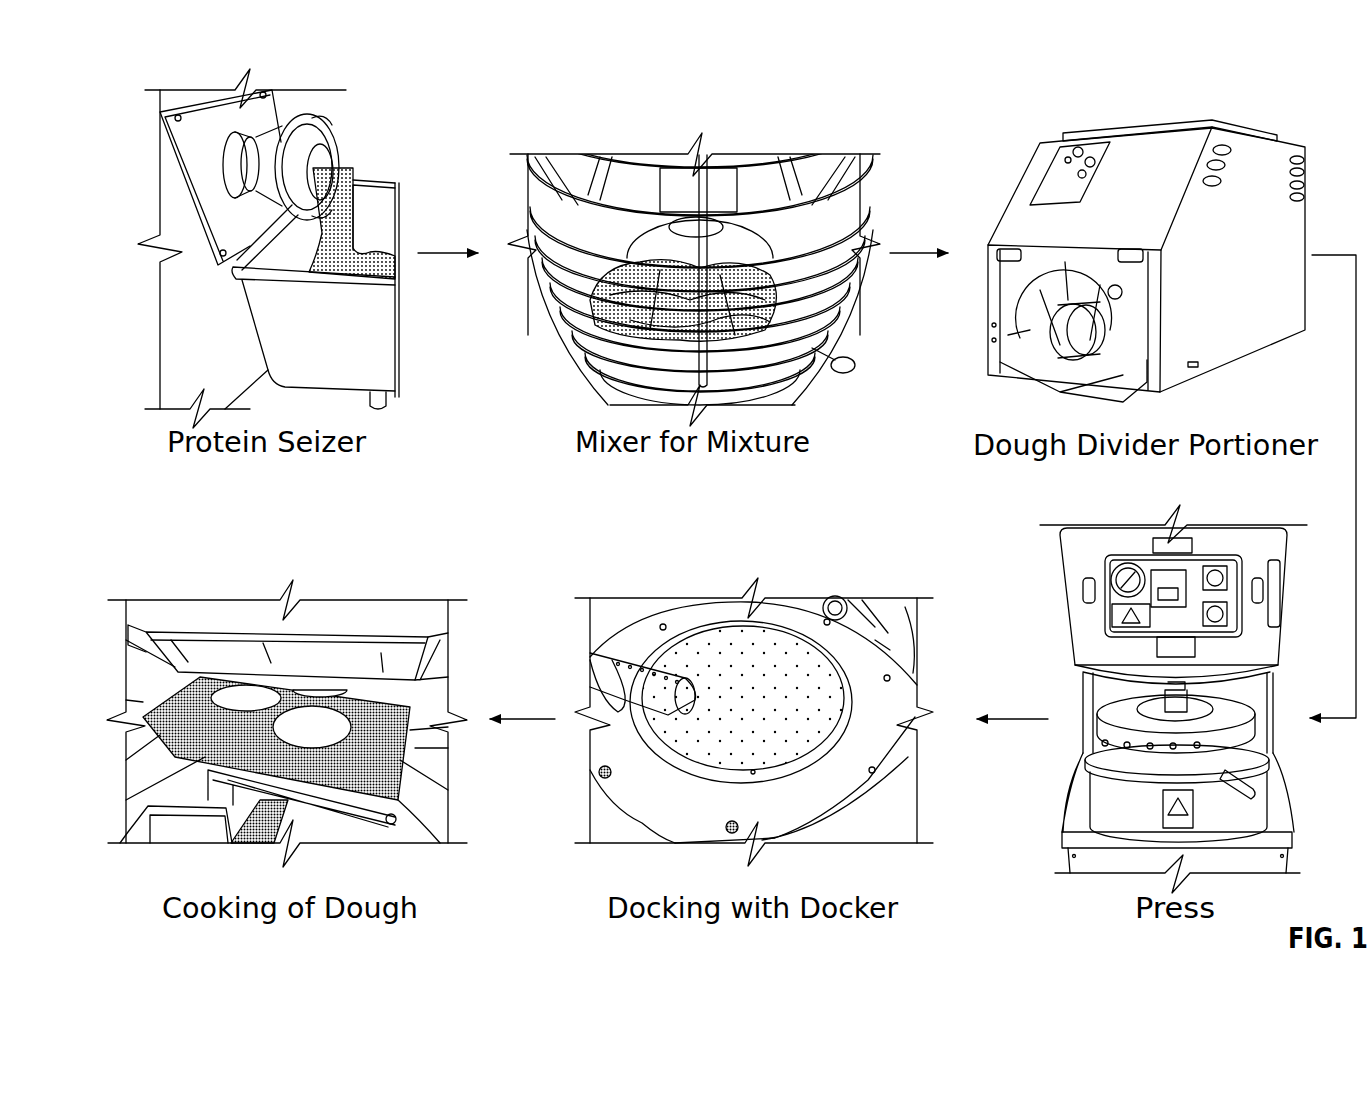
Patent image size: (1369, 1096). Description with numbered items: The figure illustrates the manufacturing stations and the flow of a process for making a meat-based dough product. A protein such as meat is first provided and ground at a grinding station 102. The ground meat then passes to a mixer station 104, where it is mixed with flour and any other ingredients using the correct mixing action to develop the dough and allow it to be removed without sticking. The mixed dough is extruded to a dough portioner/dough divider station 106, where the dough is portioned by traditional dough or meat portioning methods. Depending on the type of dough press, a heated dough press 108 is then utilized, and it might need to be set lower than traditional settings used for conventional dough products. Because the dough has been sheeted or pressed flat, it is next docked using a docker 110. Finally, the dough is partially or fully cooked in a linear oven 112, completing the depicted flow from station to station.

The grinding station 102 is at (194, 60).
The mixer station 104 is at (589, 88).
The dough portioner/dough divider station 106 is at (1043, 100).
The heated dough press 108 is at (1038, 550).
The docker 110 is at (613, 578).
The linear oven 112 is at (191, 576).